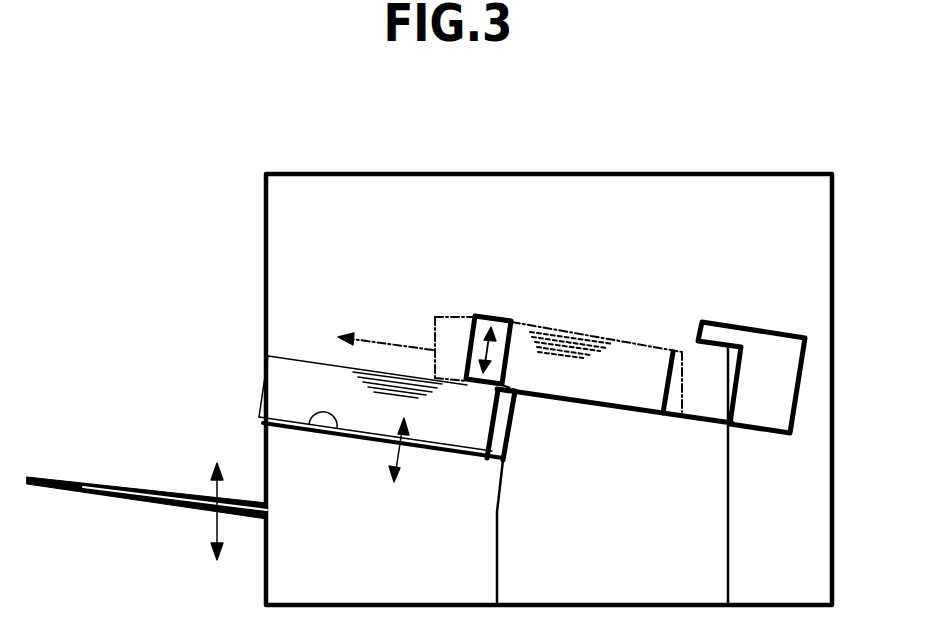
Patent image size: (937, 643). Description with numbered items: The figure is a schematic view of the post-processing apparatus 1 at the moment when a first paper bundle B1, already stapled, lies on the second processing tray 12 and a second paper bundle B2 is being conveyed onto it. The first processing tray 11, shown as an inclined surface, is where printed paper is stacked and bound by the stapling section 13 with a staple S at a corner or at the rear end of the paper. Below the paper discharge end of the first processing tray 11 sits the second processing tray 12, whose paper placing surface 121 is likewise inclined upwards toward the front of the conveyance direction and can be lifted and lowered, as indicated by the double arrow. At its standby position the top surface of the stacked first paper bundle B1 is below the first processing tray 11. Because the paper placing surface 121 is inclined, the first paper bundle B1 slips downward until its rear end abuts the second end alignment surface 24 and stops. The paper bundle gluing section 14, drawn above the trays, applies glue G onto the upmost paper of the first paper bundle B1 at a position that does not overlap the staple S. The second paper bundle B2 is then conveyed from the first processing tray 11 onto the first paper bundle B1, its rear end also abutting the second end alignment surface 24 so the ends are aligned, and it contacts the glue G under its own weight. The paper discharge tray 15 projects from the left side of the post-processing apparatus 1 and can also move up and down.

The post-processing apparatus 1 is at (741, 152).
The first processing tray 11 is at (585, 417).
The second processing tray 12 is at (359, 461).
The paper placing surface 121 is at (332, 437).
The stapling section 13 is at (763, 423).
The paper bundle gluing section 14 is at (490, 315).
The paper discharge tray 15 is at (157, 507).
The second end alignment surface 24 is at (503, 458).
The first paper bundle B1 is at (293, 378).
The second paper bundle B2 is at (597, 370).
The glue G is at (463, 380).
The staple S is at (489, 432).